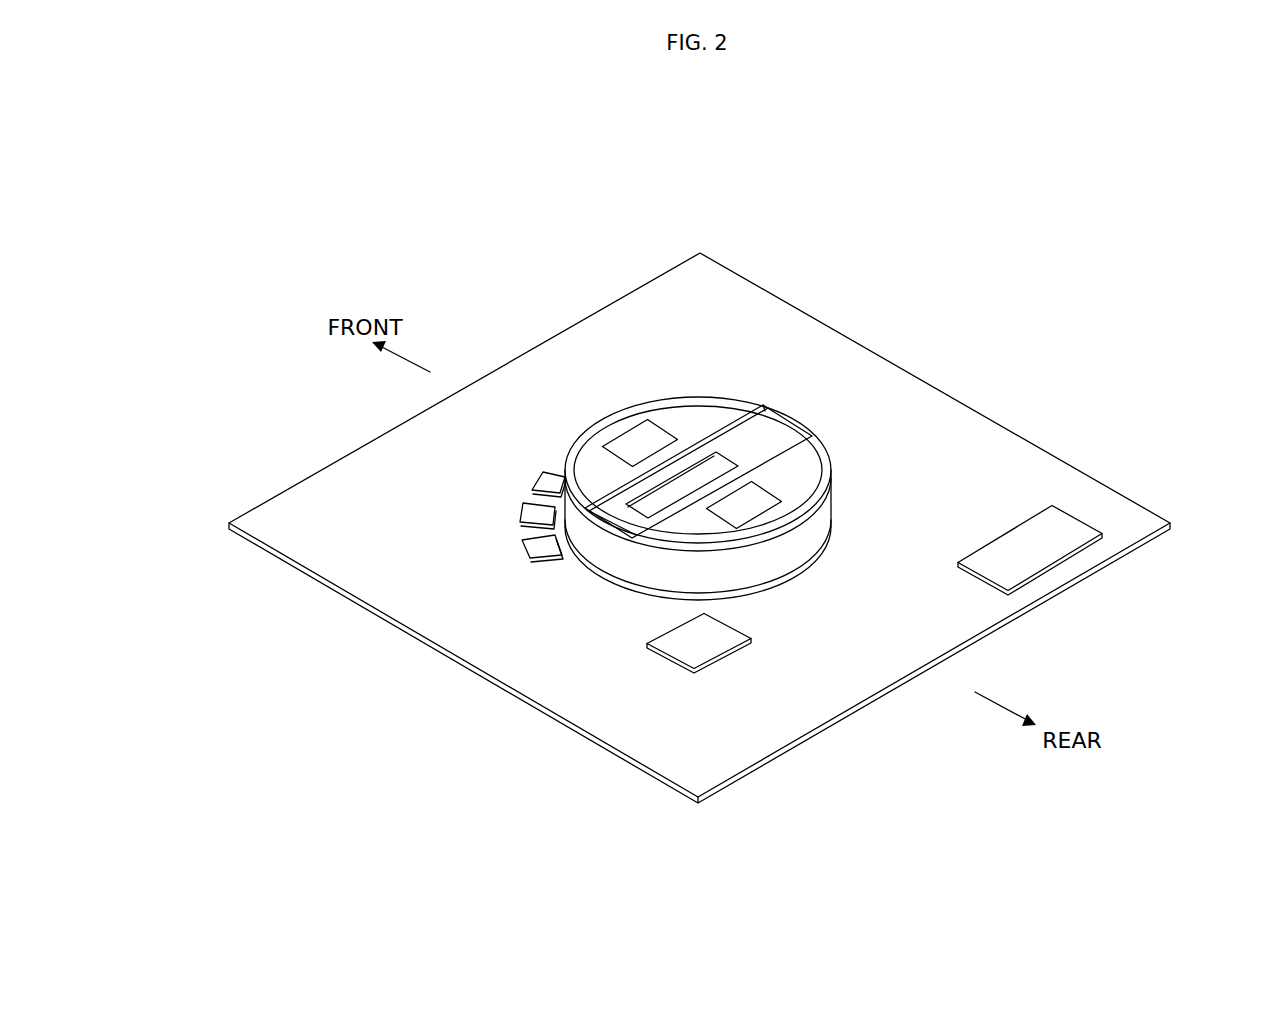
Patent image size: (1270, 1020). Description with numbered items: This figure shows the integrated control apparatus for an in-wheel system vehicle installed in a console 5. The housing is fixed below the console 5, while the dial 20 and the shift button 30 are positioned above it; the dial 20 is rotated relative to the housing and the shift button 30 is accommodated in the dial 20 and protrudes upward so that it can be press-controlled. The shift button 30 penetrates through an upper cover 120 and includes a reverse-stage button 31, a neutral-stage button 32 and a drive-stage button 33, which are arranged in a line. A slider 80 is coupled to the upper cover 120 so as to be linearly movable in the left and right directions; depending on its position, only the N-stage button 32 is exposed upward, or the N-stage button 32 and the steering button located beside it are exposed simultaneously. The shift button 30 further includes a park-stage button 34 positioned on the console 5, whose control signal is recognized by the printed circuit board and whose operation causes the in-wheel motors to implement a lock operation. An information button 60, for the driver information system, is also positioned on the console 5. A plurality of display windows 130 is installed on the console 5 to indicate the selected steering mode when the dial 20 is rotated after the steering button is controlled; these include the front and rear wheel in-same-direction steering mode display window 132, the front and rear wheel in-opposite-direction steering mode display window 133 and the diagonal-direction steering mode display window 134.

The console 5 is at (770, 722).
The dial 20 is at (623, 557).
The shift button 30 is at (663, 412).
The reverse (R)-stage button 31 is at (647, 428).
The neutral (N)-stage button 32 is at (697, 448).
The drive (D)-stage button 33 is at (766, 494).
The park (P)-stage button 34 is at (678, 653).
The information button 60 is at (1067, 530).
The slider 80 is at (747, 443).
The upper cover 120 is at (688, 417).
The display windows 130 is at (371, 573).
The front and rear wheel in-same-direction steering mode display window 132 is at (545, 485).
The front and rear wheel in-opposite-direction steering mode display window 133 is at (533, 515).
The diagonal-direction steering mode display window 134 is at (532, 547).